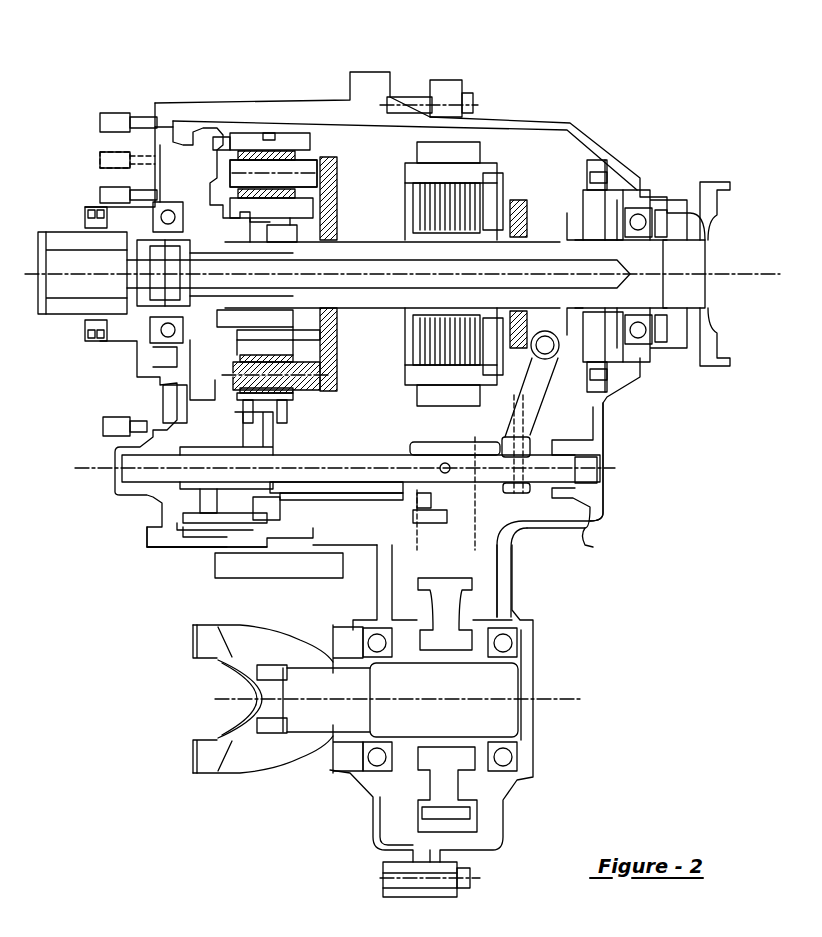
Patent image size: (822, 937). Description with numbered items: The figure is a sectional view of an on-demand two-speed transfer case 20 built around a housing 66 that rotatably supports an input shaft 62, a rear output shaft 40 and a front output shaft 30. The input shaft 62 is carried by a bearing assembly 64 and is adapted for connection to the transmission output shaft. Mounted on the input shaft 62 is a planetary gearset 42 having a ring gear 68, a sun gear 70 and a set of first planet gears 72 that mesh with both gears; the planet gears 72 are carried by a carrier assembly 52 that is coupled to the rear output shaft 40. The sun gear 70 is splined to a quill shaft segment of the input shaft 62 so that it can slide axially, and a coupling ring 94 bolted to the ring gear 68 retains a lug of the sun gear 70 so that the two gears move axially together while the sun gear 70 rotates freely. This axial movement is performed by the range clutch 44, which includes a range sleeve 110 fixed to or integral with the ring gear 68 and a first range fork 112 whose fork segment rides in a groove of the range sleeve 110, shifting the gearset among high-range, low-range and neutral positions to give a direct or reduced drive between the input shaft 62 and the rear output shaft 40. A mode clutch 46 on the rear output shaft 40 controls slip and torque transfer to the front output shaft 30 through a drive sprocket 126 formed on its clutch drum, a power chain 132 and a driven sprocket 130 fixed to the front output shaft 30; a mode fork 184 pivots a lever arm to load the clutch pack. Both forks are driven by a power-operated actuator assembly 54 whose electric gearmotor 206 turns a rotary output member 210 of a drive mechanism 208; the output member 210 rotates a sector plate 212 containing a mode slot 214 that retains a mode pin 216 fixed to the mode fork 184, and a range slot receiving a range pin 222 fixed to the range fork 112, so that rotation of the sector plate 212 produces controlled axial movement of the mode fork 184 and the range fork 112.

The transfer case 20 is at (515, 80).
The front output shaft 30 is at (292, 745).
The rear output shaft 40 is at (693, 270).
The planetary gearset 42 is at (327, 140).
The range clutch 44 is at (313, 423).
The mode clutch 46 is at (523, 163).
The carrier assembly 52 is at (340, 163).
The power-operated actuator assembly 54 is at (185, 572).
The input shaft 62 is at (62, 232).
The bearing assembly 64 is at (153, 320).
The housing 66 is at (593, 547).
The ring gear 68 is at (300, 140).
The sun gear 70 is at (268, 215).
The first planet gears 72 is at (270, 415).
The coupling ring 94 is at (210, 190).
The range sleeve 110 is at (300, 150).
The first range fork 112 is at (213, 443).
The drive sprocket 126 is at (483, 153).
The driven sprocket 130 is at (447, 612).
The power chain 132 is at (463, 567).
The mode fork 184 is at (442, 445).
The electric gearmotor 206 is at (236, 565).
The drive mechanism 208 is at (177, 523).
The rotary output member 210 is at (293, 520).
The sector plate 212 is at (367, 520).
The mode slot 214 is at (408, 532).
The mode pin 216 is at (437, 530).
The range pin 222 is at (200, 520).